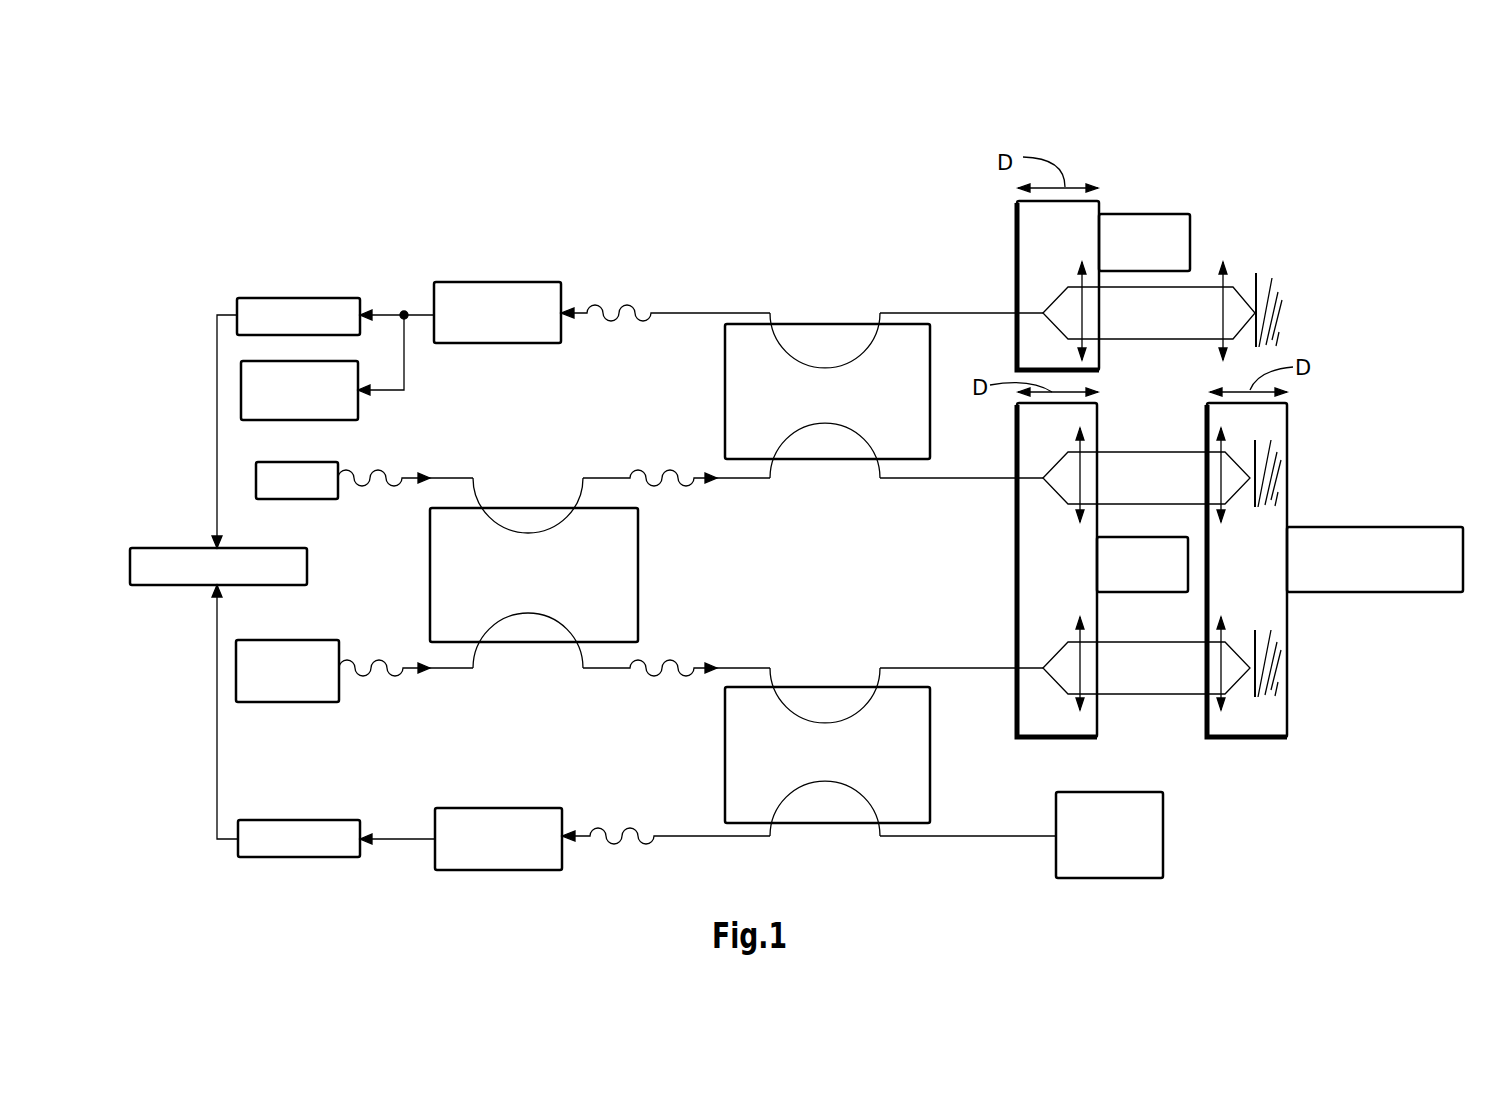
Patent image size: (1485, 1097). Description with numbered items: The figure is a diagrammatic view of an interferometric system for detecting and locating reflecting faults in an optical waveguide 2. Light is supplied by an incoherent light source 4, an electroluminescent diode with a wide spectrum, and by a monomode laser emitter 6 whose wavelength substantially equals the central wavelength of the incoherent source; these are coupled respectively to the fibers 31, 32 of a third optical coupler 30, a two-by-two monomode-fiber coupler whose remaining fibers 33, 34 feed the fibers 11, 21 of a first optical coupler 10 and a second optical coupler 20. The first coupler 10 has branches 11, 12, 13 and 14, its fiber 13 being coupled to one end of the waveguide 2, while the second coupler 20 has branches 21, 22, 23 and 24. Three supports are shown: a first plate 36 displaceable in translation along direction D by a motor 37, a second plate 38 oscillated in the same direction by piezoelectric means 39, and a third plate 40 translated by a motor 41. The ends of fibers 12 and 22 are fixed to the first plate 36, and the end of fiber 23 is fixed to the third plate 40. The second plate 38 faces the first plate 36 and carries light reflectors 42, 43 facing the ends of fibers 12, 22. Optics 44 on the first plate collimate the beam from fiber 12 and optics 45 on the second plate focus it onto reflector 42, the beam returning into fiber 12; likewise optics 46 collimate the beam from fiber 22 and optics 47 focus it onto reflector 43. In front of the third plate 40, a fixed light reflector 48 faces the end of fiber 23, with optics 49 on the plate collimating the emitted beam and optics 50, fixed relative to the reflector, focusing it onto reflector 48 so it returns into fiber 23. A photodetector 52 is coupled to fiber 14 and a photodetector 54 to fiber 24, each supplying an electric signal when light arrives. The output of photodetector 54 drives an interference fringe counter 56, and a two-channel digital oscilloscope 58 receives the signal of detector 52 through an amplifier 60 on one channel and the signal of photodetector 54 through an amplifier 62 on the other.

The optical waveguide 2 is at (1150, 848).
The incoherent light source 4 is at (328, 648).
The monomode laser emitter 6 is at (273, 462).
The first optical coupler 10 is at (738, 735).
The optical fiber branch 11 is at (746, 668).
The optical fiber branch 12 is at (957, 668).
The optical fiber branch 13 is at (1030, 836).
The optical fiber branch 14 is at (683, 836).
The second optical coupler 20 is at (745, 382).
The optical fiber branch 21 is at (740, 478).
The optical fiber branch 22 is at (965, 478).
The optical fiber branch 23 is at (960, 313).
The optical fiber branch 24 is at (698, 313).
The third optical coupler 30 is at (625, 575).
The optical fiber branch 31 is at (453, 673).
The optical fiber branch 32 is at (448, 478).
The optical fiber branch 33 is at (603, 673).
The optical fiber branch 34 is at (602, 478).
The first plate 36 is at (1050, 723).
The motor 37 is at (1112, 545).
The second plate 38 is at (1245, 723).
The piezoelectric means 39 is at (1355, 534).
The third plate 40 is at (1035, 225).
The motor 41 is at (1145, 222).
The light reflector 42 is at (1266, 657).
The light reflector 43 is at (1262, 494).
The optics 44 is at (1076, 626).
The optics 45 is at (1226, 623).
The optics 46 is at (1076, 441).
The optics 47 is at (1226, 437).
The fixed light reflector 48 is at (1268, 303).
The optics 49 is at (1079, 267).
The optics 50 is at (1228, 268).
The photodetector 52 is at (488, 810).
The photodetector 54 is at (535, 283).
The interference fringe counter 56 is at (352, 412).
The two-channel digital oscilloscope 58 is at (307, 555).
The amplifier 60 is at (283, 820).
The amplifier 62 is at (312, 298).